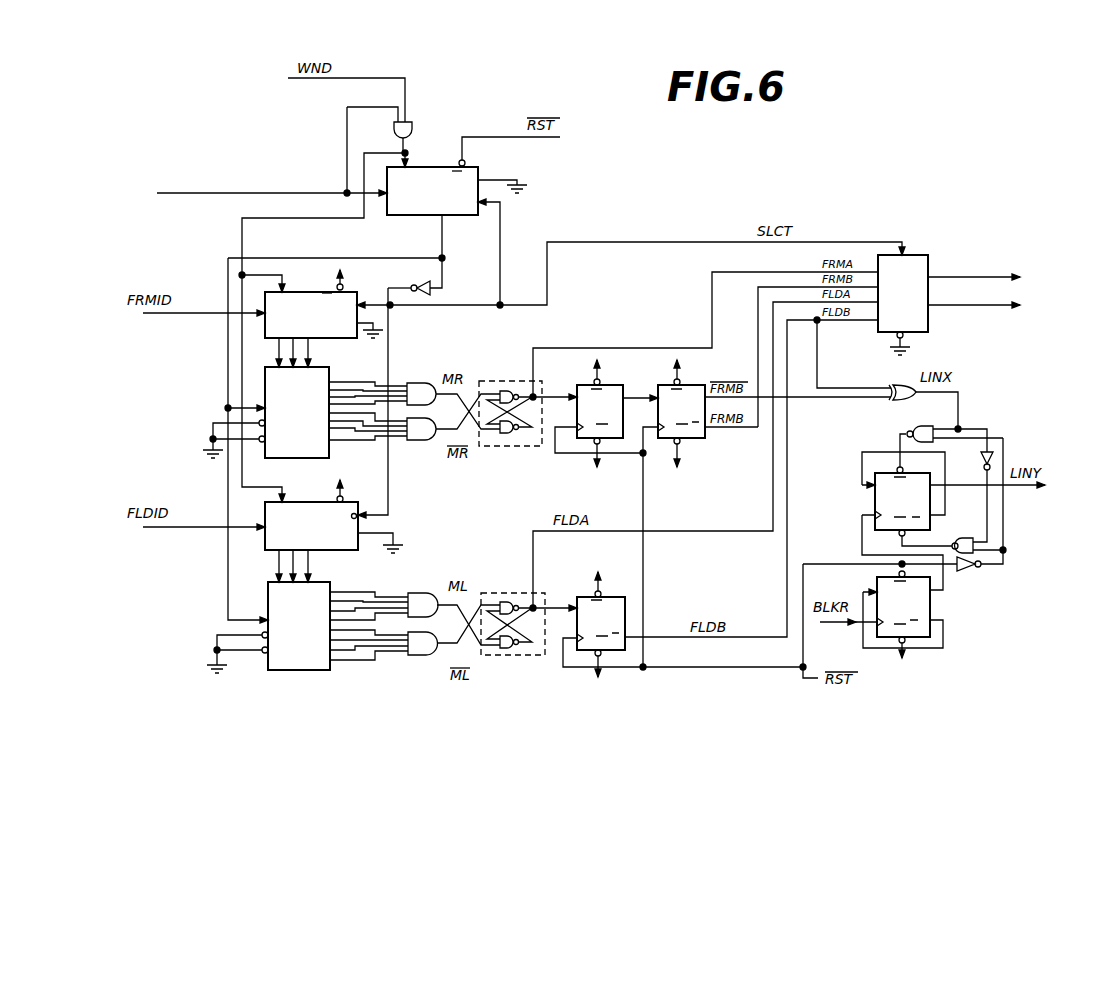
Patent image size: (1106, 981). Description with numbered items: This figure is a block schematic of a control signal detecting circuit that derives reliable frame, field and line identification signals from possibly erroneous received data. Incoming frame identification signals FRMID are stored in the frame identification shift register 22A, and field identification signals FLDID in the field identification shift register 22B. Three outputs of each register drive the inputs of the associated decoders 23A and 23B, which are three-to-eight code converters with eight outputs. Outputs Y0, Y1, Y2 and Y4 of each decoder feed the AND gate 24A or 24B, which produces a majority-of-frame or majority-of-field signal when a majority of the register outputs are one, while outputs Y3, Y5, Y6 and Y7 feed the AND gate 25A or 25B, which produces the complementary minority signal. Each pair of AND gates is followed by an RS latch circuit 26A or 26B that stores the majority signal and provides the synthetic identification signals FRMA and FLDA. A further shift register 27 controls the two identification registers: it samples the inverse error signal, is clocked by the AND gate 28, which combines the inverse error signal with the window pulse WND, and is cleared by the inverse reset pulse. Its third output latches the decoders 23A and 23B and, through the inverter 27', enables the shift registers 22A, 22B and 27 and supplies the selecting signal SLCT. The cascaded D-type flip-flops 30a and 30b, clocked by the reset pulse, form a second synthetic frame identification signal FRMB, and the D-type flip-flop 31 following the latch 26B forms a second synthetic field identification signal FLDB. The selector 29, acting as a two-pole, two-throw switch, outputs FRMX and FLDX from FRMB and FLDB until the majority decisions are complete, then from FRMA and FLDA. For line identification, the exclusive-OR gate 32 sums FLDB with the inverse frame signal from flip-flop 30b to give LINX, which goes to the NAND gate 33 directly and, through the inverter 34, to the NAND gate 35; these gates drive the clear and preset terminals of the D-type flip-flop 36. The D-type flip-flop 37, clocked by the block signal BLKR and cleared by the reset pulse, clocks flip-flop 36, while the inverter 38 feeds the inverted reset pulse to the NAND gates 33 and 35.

The frame identification shift register 22A is at (326, 284).
The field identification shift register 22B is at (325, 494).
The decoder 23A is at (322, 367).
The decoder 23B is at (300, 670).
The AND gate 24A is at (421, 373).
The AND gate 24B is at (418, 593).
The AND gate 25A is at (417, 440).
The AND gate 25B is at (417, 655).
The RS latch circuit 26A is at (517, 381).
The RS latch circuit 26B is at (510, 593).
The shift register 27 is at (457, 205).
The inverter 27' is at (409, 276).
The AND gate 28 is at (412, 128).
The selector 29 is at (905, 255).
The D-type flip-flop 30a is at (618, 386).
The D-type flip-flop 30b is at (702, 386).
The D-type flip-flop 31 is at (627, 589).
The exclusive-OR gate 32 is at (900, 403).
The NAND gate 33 is at (927, 426).
The inverter 34 is at (980, 460).
The NAND gate 35 is at (963, 537).
The D-type flip-flop 36 is at (875, 492).
The D-type flip-flop 37 is at (932, 600).
The inverter 38 is at (983, 572).